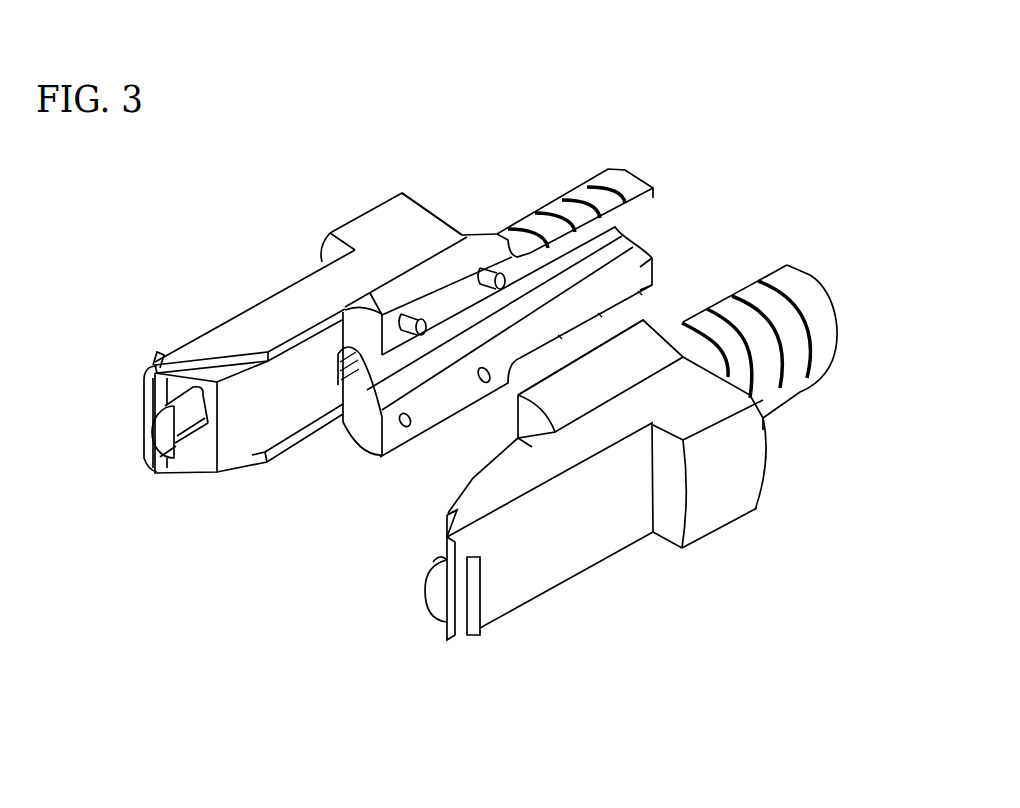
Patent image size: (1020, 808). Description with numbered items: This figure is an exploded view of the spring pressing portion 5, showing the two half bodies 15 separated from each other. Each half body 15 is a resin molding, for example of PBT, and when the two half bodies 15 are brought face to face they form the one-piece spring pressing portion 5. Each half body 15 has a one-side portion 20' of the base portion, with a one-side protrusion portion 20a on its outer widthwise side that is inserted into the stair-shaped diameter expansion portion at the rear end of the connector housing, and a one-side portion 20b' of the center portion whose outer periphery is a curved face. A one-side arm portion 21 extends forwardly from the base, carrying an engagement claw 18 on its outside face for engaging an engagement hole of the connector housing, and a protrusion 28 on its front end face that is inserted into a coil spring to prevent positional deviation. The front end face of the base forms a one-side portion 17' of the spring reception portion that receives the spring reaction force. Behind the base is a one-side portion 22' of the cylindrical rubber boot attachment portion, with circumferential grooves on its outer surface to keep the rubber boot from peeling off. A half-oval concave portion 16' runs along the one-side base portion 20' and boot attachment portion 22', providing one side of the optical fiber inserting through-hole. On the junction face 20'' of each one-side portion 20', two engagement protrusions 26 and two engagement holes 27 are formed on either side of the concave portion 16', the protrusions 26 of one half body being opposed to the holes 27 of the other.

The spring pressing portion 5 is at (616, 100).
The half body 15 is at (382, 215).
The half-oval concave portion 16' is at (397, 431).
The one-side portion of the spring reception portion 17' is at (443, 412).
The engagement claw 18 is at (150, 356).
The one-side portion of the base portion 20' is at (554, 272).
The junction face 20'' is at (464, 399).
The protrusion portion 20a is at (334, 230).
The one-side portion of the center portion 20b' is at (523, 319).
The arm portion 21 is at (202, 336).
The one-side portion of the rubber boot attachment portion 22' is at (667, 274).
The engagement protrusion 26 is at (424, 334).
The engagement hole 27 is at (407, 430).
The protrusion 28 is at (146, 462).